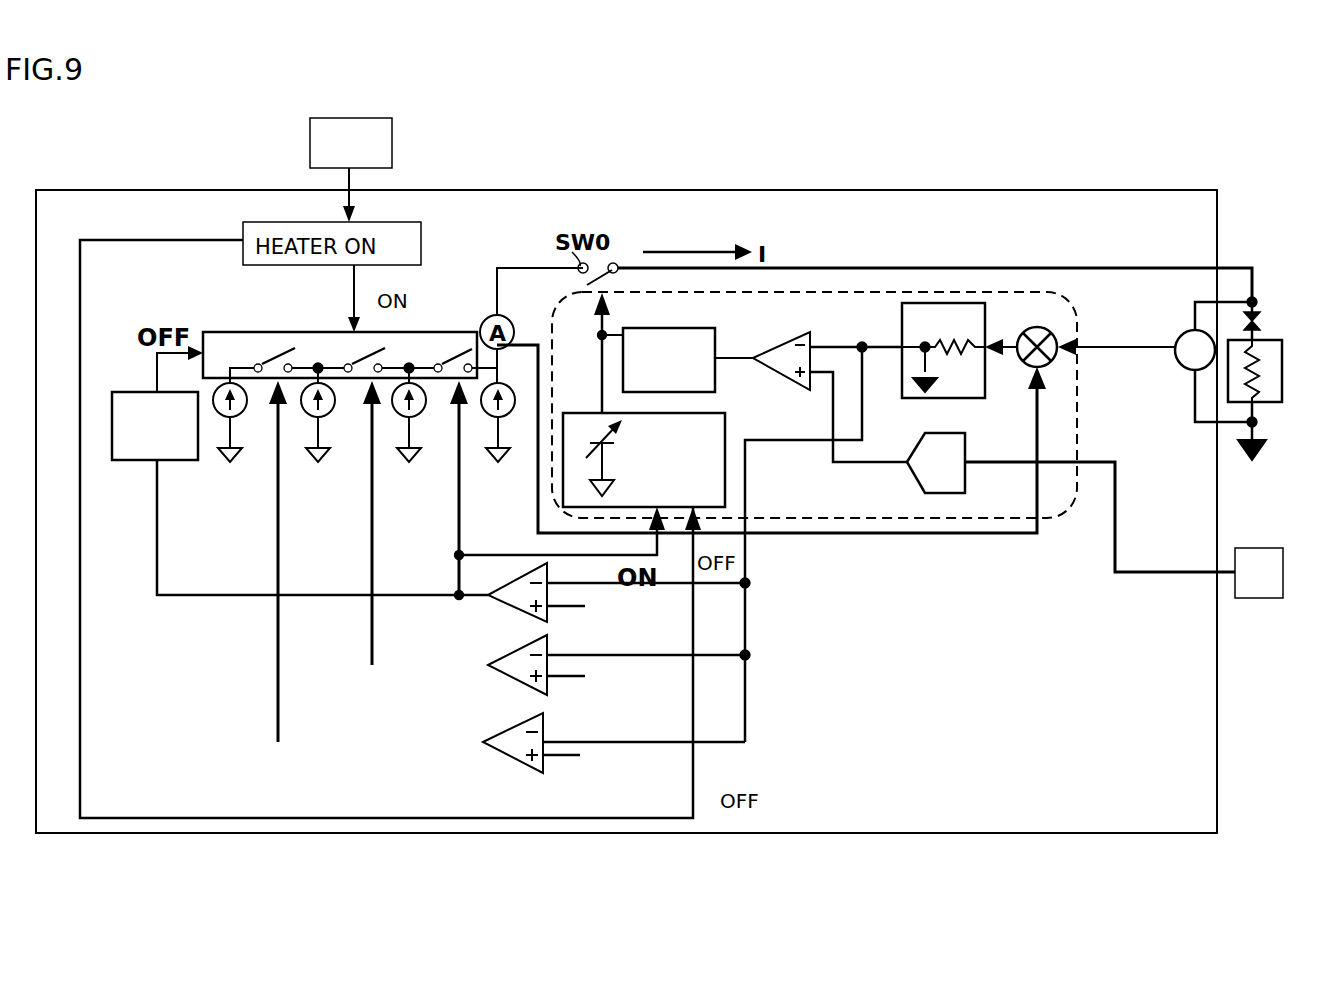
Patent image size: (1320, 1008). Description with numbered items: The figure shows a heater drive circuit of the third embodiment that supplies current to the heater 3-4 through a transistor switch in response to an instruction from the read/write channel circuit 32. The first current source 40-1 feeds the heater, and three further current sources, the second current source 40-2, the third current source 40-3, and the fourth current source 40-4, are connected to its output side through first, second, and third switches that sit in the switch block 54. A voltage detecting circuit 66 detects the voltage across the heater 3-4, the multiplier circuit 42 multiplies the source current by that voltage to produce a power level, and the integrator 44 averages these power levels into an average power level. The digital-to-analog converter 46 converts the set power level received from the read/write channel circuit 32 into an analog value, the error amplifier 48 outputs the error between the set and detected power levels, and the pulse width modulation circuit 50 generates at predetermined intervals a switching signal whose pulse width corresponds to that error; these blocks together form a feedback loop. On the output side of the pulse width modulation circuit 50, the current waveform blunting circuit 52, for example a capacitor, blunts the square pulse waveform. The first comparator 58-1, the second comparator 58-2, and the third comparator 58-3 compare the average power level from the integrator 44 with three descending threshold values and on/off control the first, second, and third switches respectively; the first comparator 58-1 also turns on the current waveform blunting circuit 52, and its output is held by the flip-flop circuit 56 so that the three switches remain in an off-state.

The read/write channel circuit 32 is at (365, 118).
The switch circuit 54 is at (222, 332).
The flip-flop circuit 56 is at (128, 452).
The first current source 40-1 is at (522, 440).
The second current source 40-2 is at (432, 440).
The third current source 40-3 is at (340, 440).
The fourth current source 40-4 is at (250, 440).
The first comparator 58-1 is at (510, 608).
The second comparator 58-2 is at (510, 683).
The third comparator 58-3 is at (505, 760).
The pulse width modulation circuit 50 is at (680, 328).
The error amplifier 48 is at (768, 378).
The current waveform blunting circuit 52 is at (725, 428).
The integrator 44 is at (902, 315).
The digital-to-analog converter 46 is at (1030, 462).
The multiplier circuit 42 is at (1050, 330).
The voltage detecting circuit 66 is at (1178, 368).
The heater 3-4 is at (1262, 395).